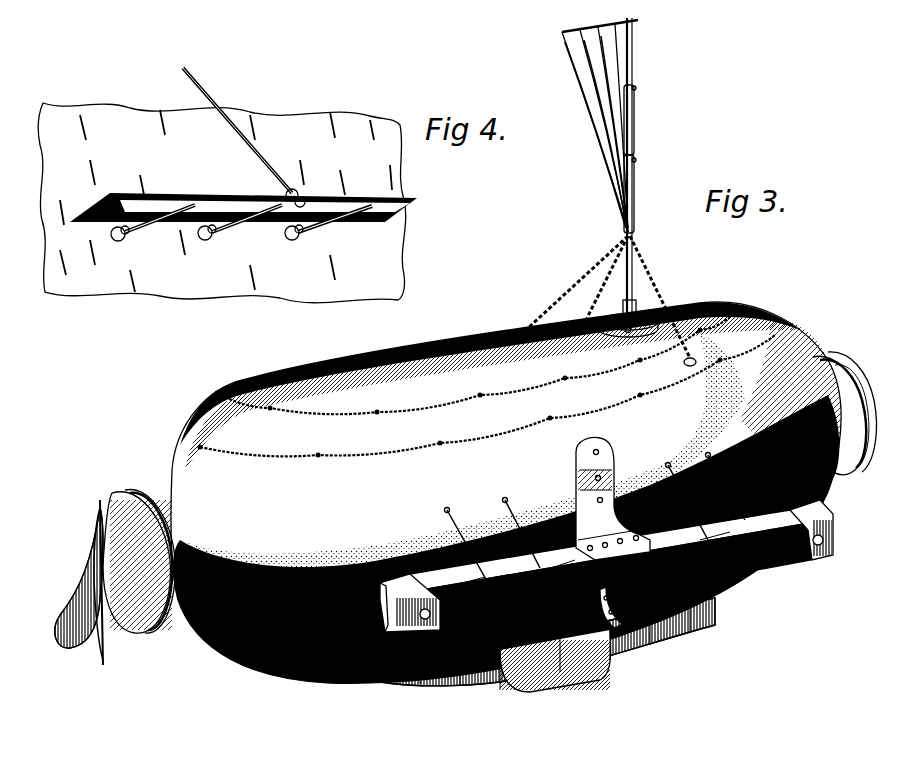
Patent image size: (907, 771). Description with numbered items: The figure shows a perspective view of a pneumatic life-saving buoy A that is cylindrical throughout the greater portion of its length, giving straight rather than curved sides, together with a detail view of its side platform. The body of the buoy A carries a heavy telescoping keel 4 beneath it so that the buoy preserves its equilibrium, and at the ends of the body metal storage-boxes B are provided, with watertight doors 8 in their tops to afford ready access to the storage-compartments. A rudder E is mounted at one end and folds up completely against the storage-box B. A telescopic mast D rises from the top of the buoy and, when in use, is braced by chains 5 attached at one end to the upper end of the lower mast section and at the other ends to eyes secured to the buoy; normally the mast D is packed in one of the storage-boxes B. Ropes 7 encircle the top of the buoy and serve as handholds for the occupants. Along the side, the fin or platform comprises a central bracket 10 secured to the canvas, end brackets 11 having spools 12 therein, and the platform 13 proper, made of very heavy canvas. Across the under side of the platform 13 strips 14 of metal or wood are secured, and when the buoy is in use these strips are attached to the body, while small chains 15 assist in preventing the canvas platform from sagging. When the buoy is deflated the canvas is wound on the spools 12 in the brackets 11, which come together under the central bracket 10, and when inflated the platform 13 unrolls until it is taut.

In FIG. 3, the telescoping keel 4 is at (545, 645).
In FIG. 3, the chains 5 is at (605, 301).
In FIG. 3, the ropes 7 is at (362, 410).
In FIG. 3, the watertight doors 8 is at (112, 493).
In FIG. 3, the central bracket 10 is at (613, 533).
In FIG. 3, the end brackets 11 is at (833, 533).
In FIG. 3, the spools 12 is at (815, 565).
In FIG. 3, the platform 13 is at (562, 569).
In FIG. 4, the platform 13 is at (418, 200).
In FIG. 4, the strips 14 is at (152, 232).
In FIG. 3, the small chains 15 is at (505, 518).
In FIG. 4, the small chains 15 is at (244, 137).
In FIG. 4, the buoy A is at (358, 290).
In FIG. 3, the storage-boxes B is at (98, 520).
In FIG. 3, the telescopic mast D is at (638, 268).
In FIG. 3, the rudder E is at (79, 586).